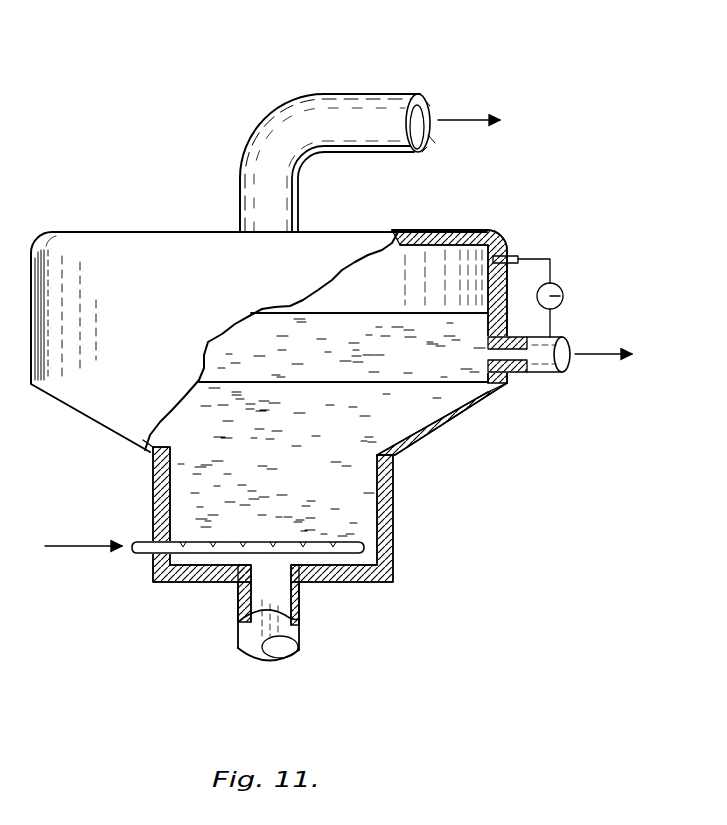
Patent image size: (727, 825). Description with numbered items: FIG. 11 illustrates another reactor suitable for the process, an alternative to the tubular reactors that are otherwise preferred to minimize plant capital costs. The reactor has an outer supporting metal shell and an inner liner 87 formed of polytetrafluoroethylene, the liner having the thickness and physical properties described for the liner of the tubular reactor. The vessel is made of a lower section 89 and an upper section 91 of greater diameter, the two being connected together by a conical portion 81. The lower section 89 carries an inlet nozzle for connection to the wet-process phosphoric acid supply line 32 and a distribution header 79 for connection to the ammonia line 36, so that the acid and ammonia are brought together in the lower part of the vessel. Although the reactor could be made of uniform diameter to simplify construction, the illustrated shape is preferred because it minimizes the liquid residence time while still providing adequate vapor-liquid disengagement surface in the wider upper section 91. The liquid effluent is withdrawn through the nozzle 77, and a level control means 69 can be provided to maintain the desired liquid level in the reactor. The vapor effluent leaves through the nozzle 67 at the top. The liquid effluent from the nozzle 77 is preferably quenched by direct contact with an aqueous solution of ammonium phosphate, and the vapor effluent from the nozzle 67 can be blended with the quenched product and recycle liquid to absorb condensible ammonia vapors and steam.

The nozzle 67 is at (386, 103).
The level control means 69 is at (563, 292).
The nozzle 77 is at (545, 375).
The inner liner 87 is at (445, 408).
The upper section 91 is at (296, 328).
The conical portion 81 is at (246, 418).
The lower section 89 is at (292, 504).
The distribution header 79 is at (370, 548).
The ammonia line 36 is at (130, 555).
The wet-process phosphoric acid supply line 32 is at (300, 652).